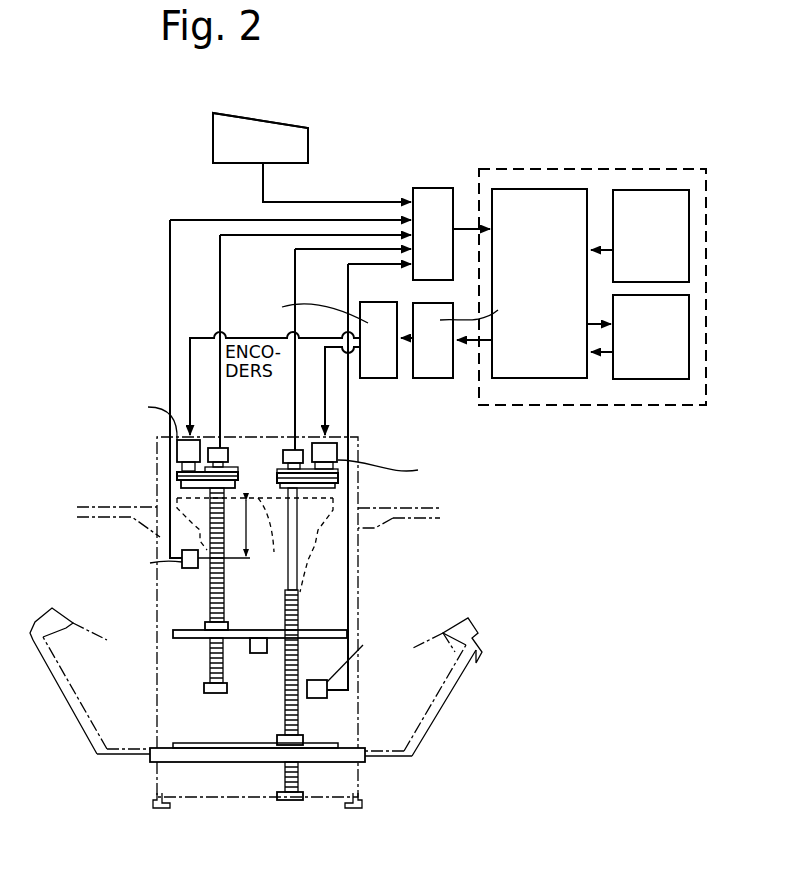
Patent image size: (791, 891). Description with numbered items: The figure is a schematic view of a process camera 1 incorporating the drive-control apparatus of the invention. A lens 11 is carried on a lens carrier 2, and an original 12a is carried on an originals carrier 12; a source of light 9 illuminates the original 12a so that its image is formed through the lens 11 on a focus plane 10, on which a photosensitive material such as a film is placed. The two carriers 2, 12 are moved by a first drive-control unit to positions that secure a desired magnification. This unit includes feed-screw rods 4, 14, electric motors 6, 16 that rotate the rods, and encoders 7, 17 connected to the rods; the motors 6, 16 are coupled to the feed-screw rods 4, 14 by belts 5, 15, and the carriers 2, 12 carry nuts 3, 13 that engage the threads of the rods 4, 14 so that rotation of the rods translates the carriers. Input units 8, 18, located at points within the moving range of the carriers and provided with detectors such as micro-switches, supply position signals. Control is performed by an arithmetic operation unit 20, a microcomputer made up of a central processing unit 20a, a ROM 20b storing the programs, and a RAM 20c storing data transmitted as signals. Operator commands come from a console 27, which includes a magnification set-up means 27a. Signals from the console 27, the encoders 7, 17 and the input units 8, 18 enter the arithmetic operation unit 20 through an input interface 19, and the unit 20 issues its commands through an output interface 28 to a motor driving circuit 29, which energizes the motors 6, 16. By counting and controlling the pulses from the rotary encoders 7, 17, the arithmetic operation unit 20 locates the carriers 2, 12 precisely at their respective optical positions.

The process camera 1 is at (385, 572).
The lens carrier 2 is at (193, 640).
The nut 3 is at (228, 622).
The feed-screw rod 4 is at (224, 577).
The belt 5 is at (180, 487).
The electric motor 6 is at (177, 450).
The encoder 7 is at (230, 450).
The input unit 8 is at (189, 569).
The source of light 9 is at (455, 650).
The focus plane 10 is at (255, 545).
The lens 11 is at (255, 653).
The originals carrier 12 is at (217, 763).
The original 12a is at (210, 742).
The nut 13 is at (305, 738).
The feed-screw rod 14 is at (284, 715).
The belt 15 is at (307, 487).
The electric motor 16 is at (338, 453).
The encoder 17 is at (281, 455).
The input unit 18 is at (318, 680).
The input interface 19 is at (434, 188).
The arithmetic operation unit 20 is at (578, 169).
The central processing unit 20a is at (527, 378).
The ROM 20b is at (689, 236).
The RAM 20c is at (689, 335).
The console 27 is at (266, 113).
The magnification set-up means 27a is at (267, 114).
The output interface 28 is at (433, 380).
The motor driving circuit 29 is at (373, 380).